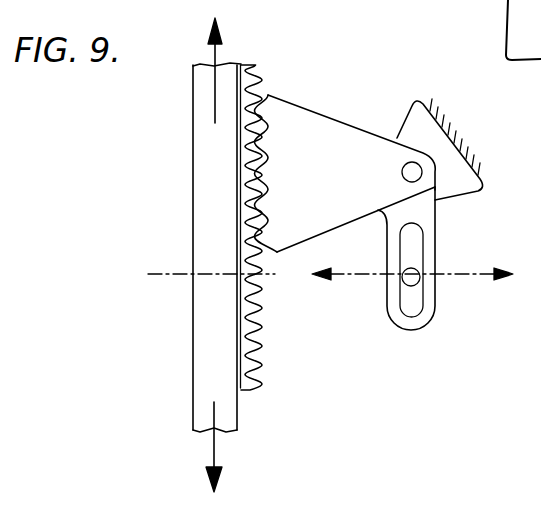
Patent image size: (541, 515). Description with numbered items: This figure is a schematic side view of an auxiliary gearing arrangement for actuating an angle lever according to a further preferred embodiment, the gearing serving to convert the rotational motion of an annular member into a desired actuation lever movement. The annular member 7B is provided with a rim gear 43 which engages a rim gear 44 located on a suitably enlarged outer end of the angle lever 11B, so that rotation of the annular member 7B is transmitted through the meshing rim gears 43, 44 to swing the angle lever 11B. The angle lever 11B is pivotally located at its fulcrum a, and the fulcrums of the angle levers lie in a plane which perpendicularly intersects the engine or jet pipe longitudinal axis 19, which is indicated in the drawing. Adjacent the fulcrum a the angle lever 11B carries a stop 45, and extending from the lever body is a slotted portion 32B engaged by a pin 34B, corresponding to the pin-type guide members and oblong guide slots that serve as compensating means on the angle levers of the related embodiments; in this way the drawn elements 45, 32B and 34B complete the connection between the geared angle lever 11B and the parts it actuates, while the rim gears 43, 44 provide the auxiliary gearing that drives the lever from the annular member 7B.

The annular member 7B is at (200, 392).
The rim gear 43 is at (250, 366).
The rim gear 44 is at (257, 147).
The engine or jet pipe longitudinal axis 19 is at (163, 272).
The angle lever 11B is at (359, 158).
The stop 45 is at (421, 99).
The fulcrum a is at (417, 176).
The slotted slide 32B is at (414, 308).
The pin 34B is at (401, 280).